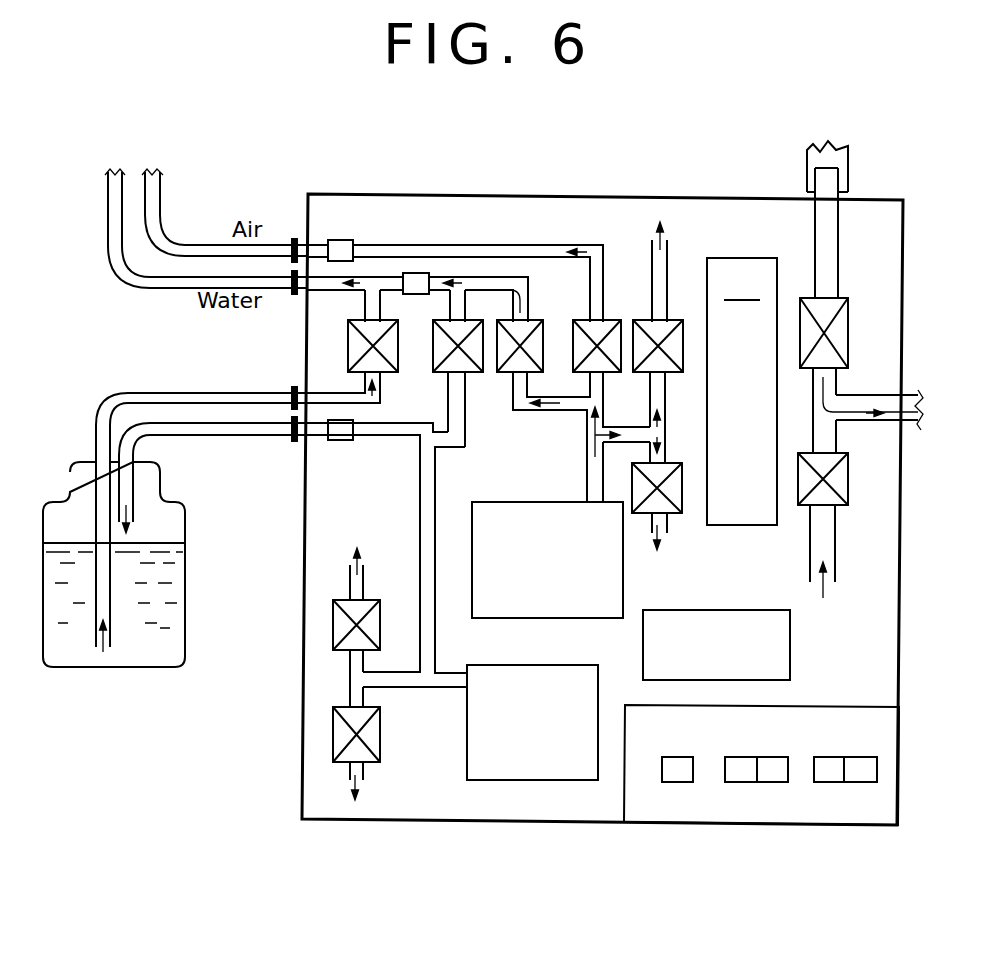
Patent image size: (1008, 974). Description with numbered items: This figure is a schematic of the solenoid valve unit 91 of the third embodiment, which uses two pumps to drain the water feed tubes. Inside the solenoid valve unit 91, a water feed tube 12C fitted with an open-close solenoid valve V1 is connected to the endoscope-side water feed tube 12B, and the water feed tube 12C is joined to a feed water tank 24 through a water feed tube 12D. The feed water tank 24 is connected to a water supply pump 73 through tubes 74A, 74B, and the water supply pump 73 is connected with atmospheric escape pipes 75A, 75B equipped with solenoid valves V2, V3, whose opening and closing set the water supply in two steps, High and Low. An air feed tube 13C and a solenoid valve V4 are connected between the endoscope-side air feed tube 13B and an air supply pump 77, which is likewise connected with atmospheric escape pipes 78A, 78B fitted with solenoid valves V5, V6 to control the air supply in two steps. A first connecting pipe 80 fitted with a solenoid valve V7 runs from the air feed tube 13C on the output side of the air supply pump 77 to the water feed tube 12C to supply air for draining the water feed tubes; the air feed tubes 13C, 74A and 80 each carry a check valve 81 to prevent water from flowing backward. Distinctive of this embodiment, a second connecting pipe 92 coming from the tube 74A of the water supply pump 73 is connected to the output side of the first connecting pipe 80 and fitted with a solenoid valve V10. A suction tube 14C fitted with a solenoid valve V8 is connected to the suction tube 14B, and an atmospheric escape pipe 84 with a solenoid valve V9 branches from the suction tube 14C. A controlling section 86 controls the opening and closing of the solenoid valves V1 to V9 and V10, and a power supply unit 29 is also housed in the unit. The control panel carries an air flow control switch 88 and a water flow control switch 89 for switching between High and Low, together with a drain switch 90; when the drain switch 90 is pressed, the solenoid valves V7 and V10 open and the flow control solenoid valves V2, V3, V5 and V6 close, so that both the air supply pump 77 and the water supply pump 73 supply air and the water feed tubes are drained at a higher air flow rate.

The solenoid valve unit 91 is at (465, 195).
The feed water tank 24 is at (185, 613).
The water feed tube 12B is at (160, 289).
The air feed tube 13B is at (184, 245).
The water feed tube 12D is at (163, 393).
The water return pipe 74B is at (190, 436).
The water feed tube 12C is at (325, 392).
The air feed tube 13C is at (507, 254).
The check valve 81 is at (408, 278).
The tube 74A is at (420, 505).
The second connecting pipe 92 is at (466, 410).
The first connecting pipe 80 is at (541, 412).
The atmospheric escape pipe 78A is at (651, 251).
The atmospheric escape pipe 78B is at (668, 531).
The power supply unit 29 is at (742, 391).
The suction tube 14B is at (835, 154).
The suction tube 14C is at (832, 225).
The atmospheric escape pipe 84 is at (837, 571).
The air supply pump 77 is at (521, 482).
The water supply pump 73 is at (519, 645).
The controlling section 86 is at (688, 590).
The atmospheric escape pipe 75A is at (350, 573).
The atmospheric escape pipe 75B is at (350, 770).
The drain switch 90 is at (680, 782).
The air flow control switch 88 is at (766, 778).
The water flow control switch 89 is at (854, 778).
The solenoid valve V1 is at (347, 345).
The solenoid valve V2 is at (381, 640).
The solenoid valve V3 is at (381, 745).
The solenoid valve V4 is at (621, 337).
The solenoid valve V5 is at (683, 336).
The solenoid valve V6 is at (682, 476).
The solenoid valve V7 is at (545, 334).
The solenoid valve V8 is at (848, 334).
The solenoid valve V9 is at (848, 490).
The solenoid valve V10 is at (433, 346).